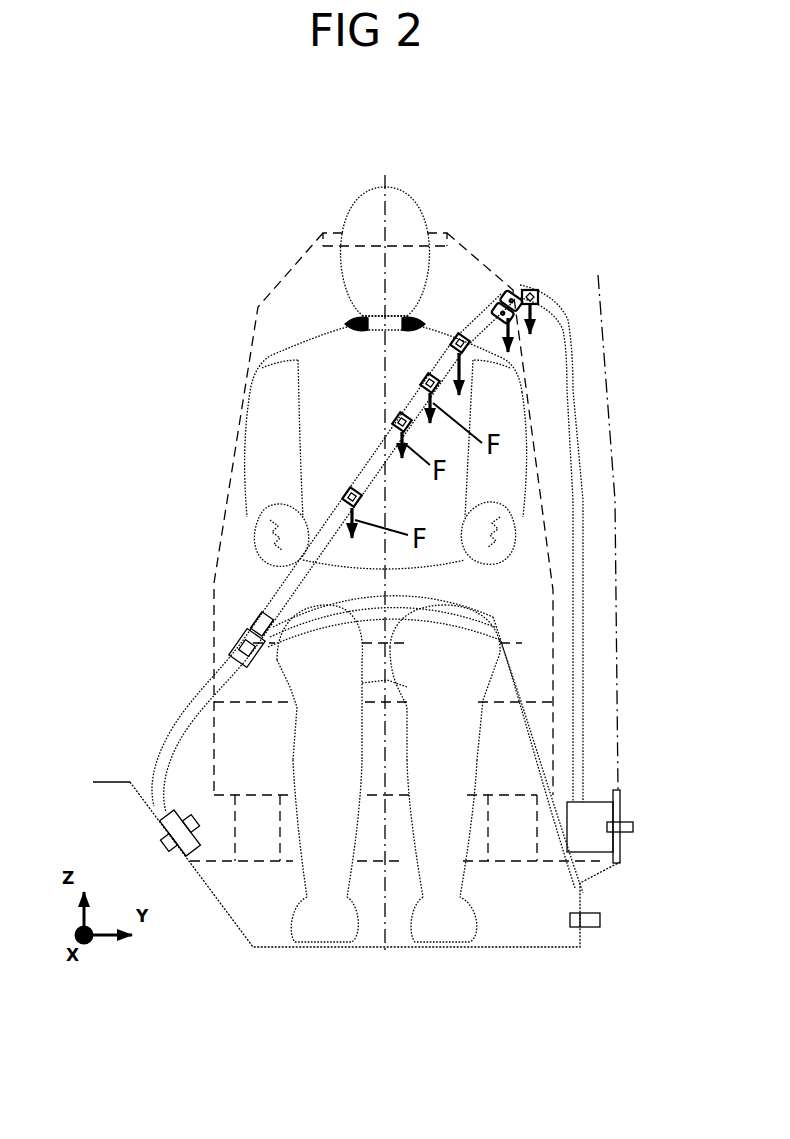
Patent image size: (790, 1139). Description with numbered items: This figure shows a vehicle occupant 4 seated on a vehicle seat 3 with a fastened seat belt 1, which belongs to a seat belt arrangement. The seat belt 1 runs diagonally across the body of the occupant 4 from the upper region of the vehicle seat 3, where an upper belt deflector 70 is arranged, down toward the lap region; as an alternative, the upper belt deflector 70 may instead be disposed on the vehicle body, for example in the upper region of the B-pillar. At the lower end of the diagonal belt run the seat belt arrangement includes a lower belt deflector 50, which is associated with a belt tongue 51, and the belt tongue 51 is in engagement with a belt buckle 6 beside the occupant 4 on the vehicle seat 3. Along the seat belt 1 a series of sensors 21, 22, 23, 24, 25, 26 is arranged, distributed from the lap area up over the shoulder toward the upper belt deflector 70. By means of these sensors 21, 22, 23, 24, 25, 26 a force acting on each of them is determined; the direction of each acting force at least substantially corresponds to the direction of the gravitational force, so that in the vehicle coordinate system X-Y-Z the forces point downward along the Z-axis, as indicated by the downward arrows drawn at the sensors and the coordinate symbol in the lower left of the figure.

The seat belt 1 is at (466, 280).
The vehicle seat 3 is at (195, 495).
The occupant 4 is at (296, 325).
The belt buckle 6 is at (235, 648).
The sensor 21 is at (349, 494).
The sensor 22 is at (396, 421).
The sensor 23 is at (425, 381).
The sensor 24 is at (465, 345).
The sensor 25 is at (518, 313).
The sensor 26 is at (536, 292).
The lower belt deflector 50 is at (262, 616).
The belt tongue 51 is at (255, 622).
The upper belt deflector 70 is at (497, 288).